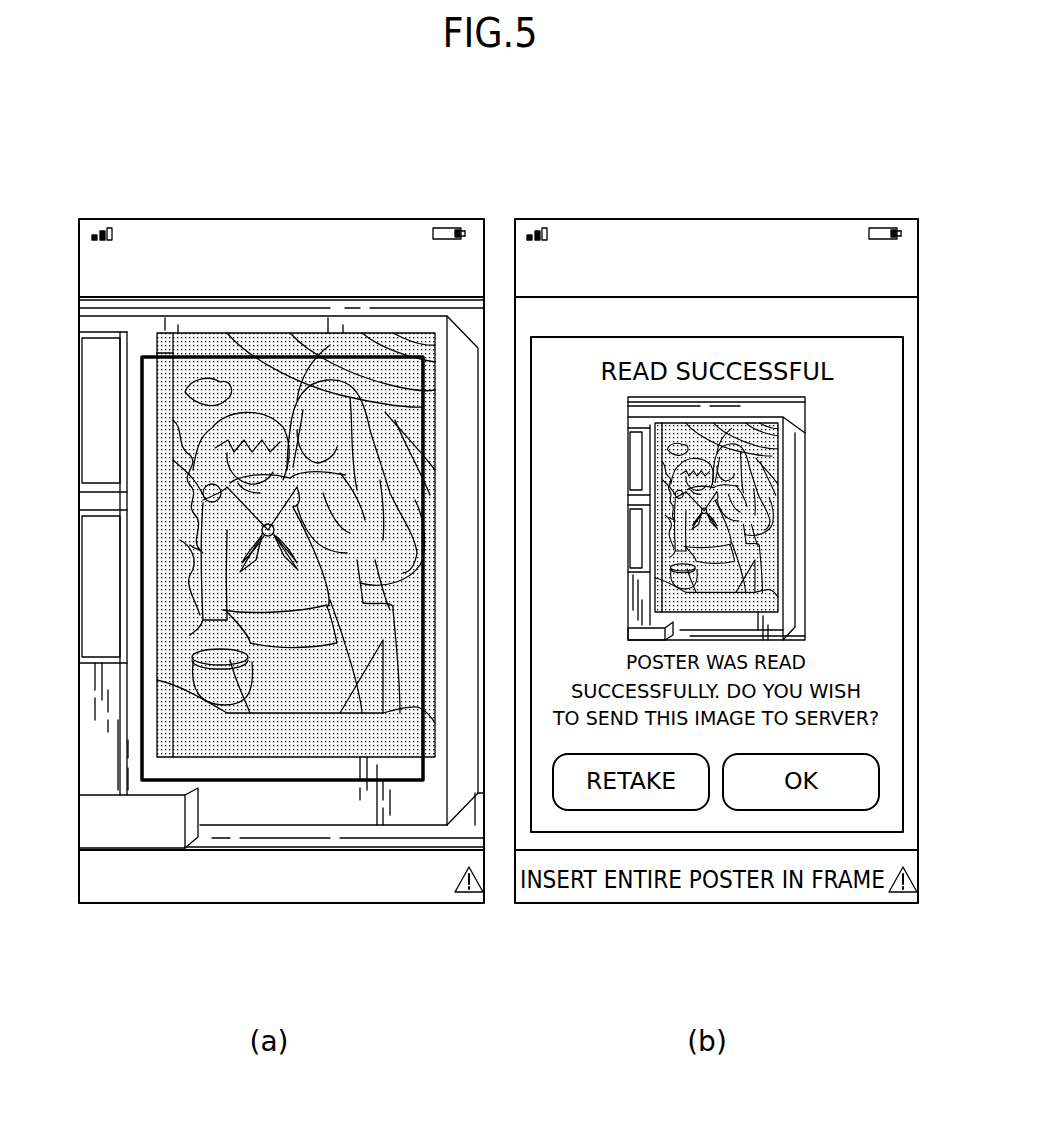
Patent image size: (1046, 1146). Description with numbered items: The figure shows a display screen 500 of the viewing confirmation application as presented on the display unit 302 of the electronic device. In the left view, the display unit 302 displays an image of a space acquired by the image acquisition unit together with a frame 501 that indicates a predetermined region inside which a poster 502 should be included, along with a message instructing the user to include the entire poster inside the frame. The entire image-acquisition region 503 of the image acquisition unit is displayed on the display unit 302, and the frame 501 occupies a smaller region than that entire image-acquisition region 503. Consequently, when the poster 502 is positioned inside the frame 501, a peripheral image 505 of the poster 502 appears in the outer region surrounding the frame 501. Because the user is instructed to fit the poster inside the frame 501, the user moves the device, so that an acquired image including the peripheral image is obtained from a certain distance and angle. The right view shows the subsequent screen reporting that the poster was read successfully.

The display screen 500 is at (421, 219).
The frame 501 is at (228, 357).
The poster 502 is at (305, 330).
The image-acquisition region 503 is at (375, 297).
The peripheral image 505 is at (145, 347).
The display unit 302 is at (415, 904).